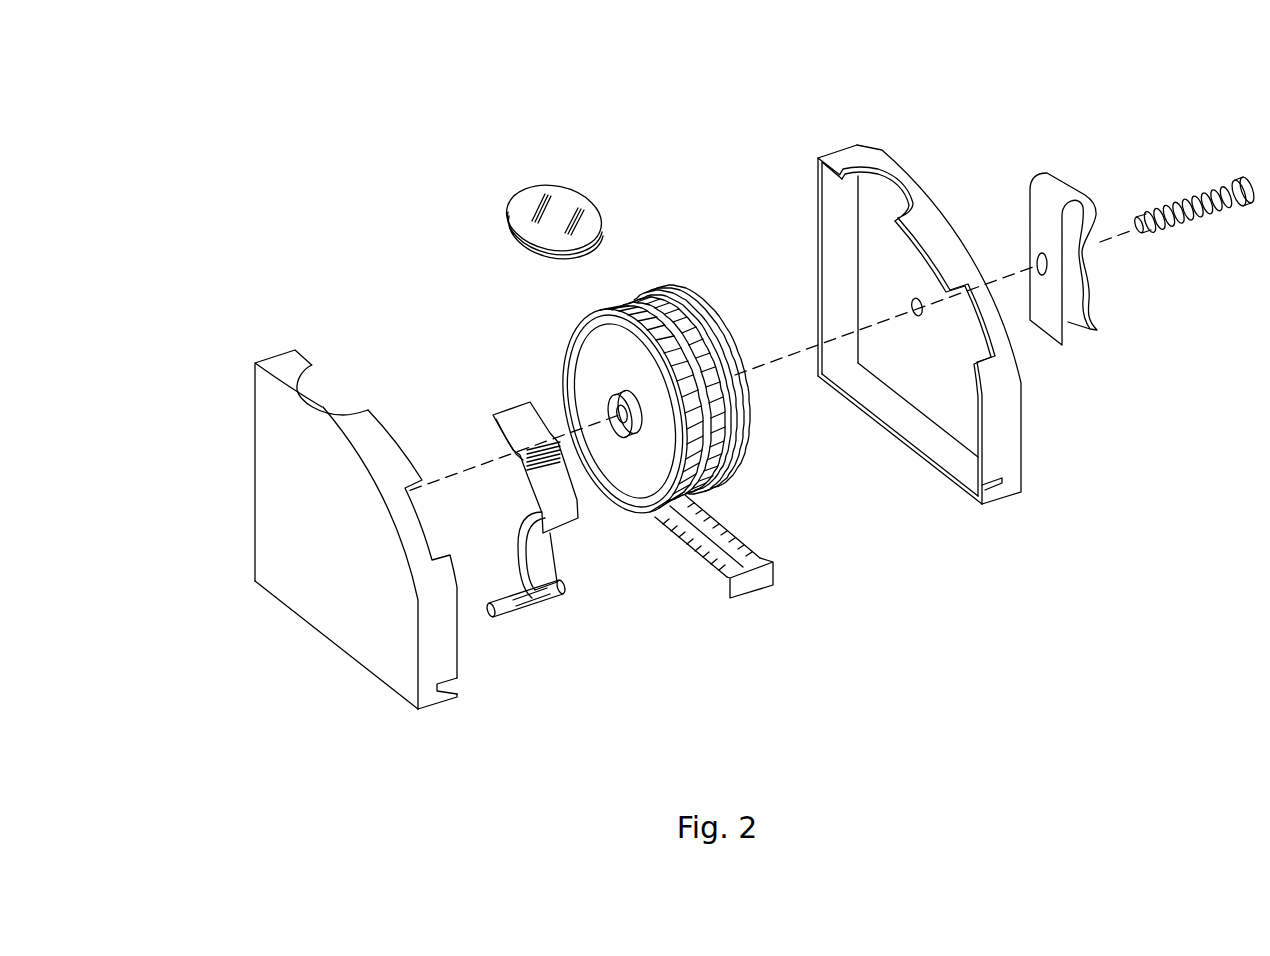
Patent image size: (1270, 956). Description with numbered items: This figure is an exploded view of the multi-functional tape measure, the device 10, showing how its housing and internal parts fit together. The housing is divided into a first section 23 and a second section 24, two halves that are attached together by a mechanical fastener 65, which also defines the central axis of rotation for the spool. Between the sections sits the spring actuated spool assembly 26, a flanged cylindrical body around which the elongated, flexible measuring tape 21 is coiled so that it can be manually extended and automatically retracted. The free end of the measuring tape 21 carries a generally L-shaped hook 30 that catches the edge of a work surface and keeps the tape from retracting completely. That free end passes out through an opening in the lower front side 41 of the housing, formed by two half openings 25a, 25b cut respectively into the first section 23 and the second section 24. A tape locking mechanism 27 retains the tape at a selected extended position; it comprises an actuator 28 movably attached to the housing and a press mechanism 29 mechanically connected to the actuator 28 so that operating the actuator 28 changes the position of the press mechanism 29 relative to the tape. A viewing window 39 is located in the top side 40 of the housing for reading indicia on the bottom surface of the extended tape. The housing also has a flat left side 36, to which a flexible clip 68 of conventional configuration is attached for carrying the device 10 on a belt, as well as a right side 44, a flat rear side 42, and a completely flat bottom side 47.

The device 10 is at (252, 166).
The measuring tape 21 is at (740, 537).
The first section 23 is at (336, 551).
The second section 24 is at (950, 344).
The half opening 25a is at (447, 690).
The half opening 25b is at (992, 487).
The spool assembly 26 is at (678, 303).
The tape locking mechanism 27 is at (494, 384).
The actuator 28 is at (563, 523).
The press mechanism 29 is at (558, 592).
The hook 30 is at (748, 583).
The left side 36 is at (914, 400).
The viewing window 39 is at (563, 197).
The top side 40 is at (293, 360).
The front side 41 is at (427, 648).
The rear side 42 is at (835, 228).
The right side 44 is at (318, 629).
The bottom side 47 is at (947, 466).
The mechanical fastener 65 is at (1175, 227).
The clip 68 is at (1052, 192).